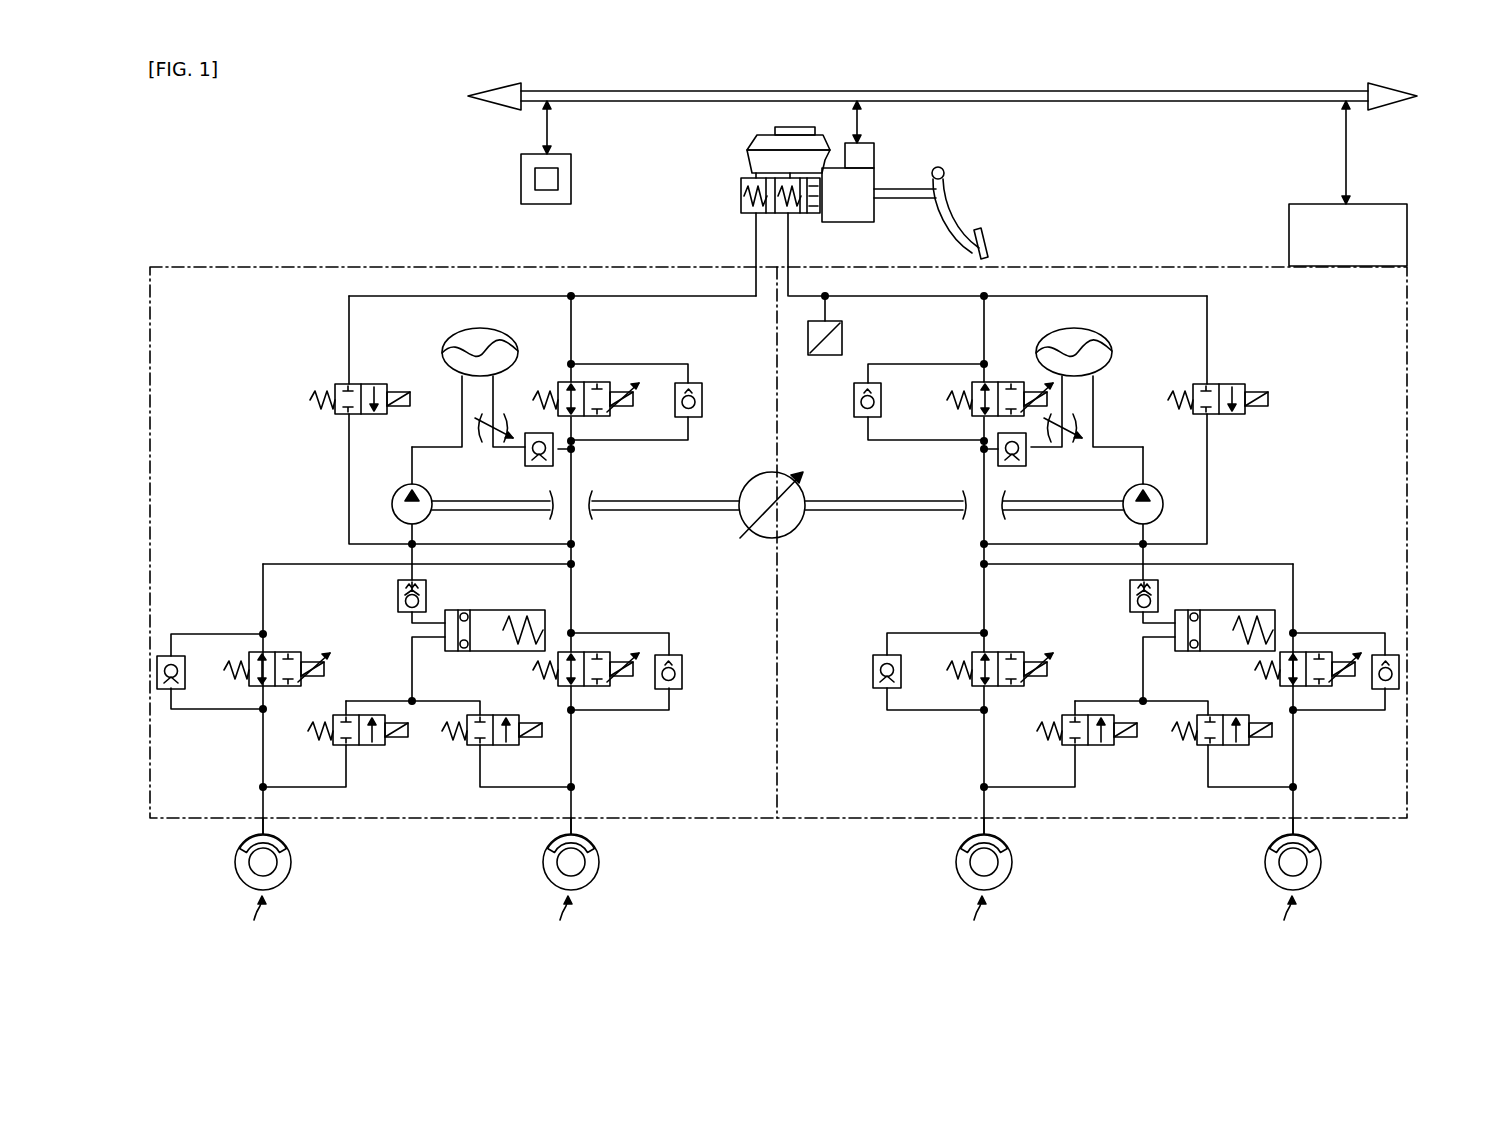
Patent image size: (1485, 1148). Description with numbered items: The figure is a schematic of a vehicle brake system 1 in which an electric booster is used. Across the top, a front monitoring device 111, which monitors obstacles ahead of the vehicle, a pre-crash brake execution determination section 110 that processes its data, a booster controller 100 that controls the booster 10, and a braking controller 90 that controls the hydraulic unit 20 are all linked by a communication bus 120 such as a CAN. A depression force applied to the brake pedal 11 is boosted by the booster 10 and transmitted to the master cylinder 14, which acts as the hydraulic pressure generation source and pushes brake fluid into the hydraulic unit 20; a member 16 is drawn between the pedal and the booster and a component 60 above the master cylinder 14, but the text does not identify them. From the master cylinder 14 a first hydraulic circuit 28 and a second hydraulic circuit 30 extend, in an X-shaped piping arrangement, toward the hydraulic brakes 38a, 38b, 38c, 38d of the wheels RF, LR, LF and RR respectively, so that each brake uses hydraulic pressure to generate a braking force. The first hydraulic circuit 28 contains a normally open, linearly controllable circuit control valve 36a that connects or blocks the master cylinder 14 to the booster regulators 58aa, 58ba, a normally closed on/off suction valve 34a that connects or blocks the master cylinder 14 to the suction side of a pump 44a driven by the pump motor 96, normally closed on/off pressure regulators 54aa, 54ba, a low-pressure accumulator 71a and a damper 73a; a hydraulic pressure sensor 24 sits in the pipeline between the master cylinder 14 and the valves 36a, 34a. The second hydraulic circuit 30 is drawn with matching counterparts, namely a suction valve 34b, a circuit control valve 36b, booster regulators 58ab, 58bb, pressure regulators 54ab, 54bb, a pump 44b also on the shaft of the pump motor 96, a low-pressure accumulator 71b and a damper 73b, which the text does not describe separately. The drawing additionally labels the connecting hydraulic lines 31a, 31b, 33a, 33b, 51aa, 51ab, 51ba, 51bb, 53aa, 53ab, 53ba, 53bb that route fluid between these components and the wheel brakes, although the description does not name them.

The vehicle brake system 1 is at (276, 218).
The electric booster 10 is at (864, 222).
The brake pedal 11 is at (950, 221).
The master cylinder 14 is at (741, 185).
The push rod 16 is at (898, 200).
The hydraulic unit 20 is at (1190, 265).
The hydraulic pressure sensor 24 is at (842, 337).
The first hydraulic circuit 28 is at (1065, 283).
The second hydraulic circuit 30 is at (452, 283).
The hydraulic passage 31a is at (1207, 331).
The hydraulic passage 31b is at (349, 331).
The hydraulic passage 33a is at (984, 329).
The hydraulic passage 33b is at (571, 329).
The suction valve 34a is at (1245, 385).
The switching valve 34b is at (392, 384).
The circuit control valve 36a is at (1022, 382).
The pressure regulating valve 36b is at (558, 382).
The hydraulic brake 38a is at (962, 844).
The hydraulic brake 38b is at (1272, 844).
The hydraulic brake 38c is at (550, 844).
The hydraulic brake 38d is at (242, 844).
The pump 44a is at (1132, 494).
The pump 44b is at (418, 494).
The wheel hydraulic passage 51aa is at (984, 594).
The wheel hydraulic passage 51ab is at (571, 594).
The wheel hydraulic passage 51ba is at (1293, 594).
The wheel hydraulic passage 51bb is at (263, 594).
The return passage 53aa is at (1208, 780).
The return passage 53ab is at (480, 780).
The return passage 53ba is at (1076, 754).
The return passage 53bb is at (347, 754).
The pressure regulator 54aa is at (1060, 740).
The pressure reducing valve 54ab is at (520, 745).
The pressure regulator 54ba is at (1250, 745).
The pressure reducing valve 54bb is at (332, 746).
The booster regulator 58aa is at (969, 682).
The pressure increasing valve 58ab is at (554, 678).
The booster regulator 58ba is at (1277, 682).
The pressure increasing valve 58bb is at (287, 650).
The reservoir 60 is at (752, 150).
The low-pressure accumulator 71a is at (1219, 610).
The low-pressure accumulator 71b is at (490, 610).
The damper 73a is at (1111, 346).
The accumulator 73b is at (444, 346).
The braking controller 90 is at (1289, 248).
The pump motor 96 is at (794, 525).
The booster controller 100 is at (874, 148).
The pre-crash brake execution determination section 110 is at (557, 180).
The front monitoring device 111 is at (570, 154).
The communication bus 120 is at (1117, 102).